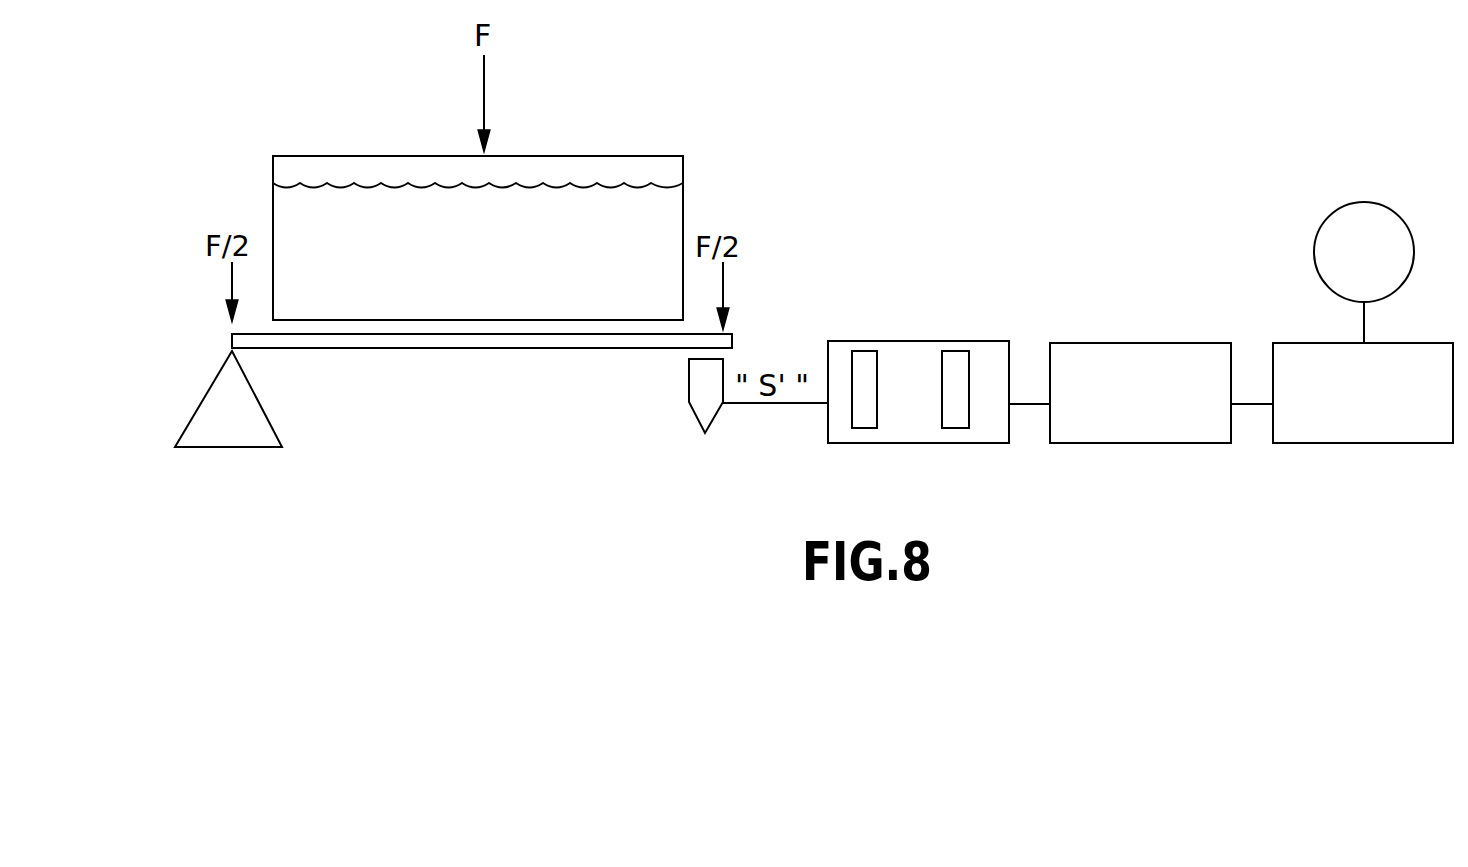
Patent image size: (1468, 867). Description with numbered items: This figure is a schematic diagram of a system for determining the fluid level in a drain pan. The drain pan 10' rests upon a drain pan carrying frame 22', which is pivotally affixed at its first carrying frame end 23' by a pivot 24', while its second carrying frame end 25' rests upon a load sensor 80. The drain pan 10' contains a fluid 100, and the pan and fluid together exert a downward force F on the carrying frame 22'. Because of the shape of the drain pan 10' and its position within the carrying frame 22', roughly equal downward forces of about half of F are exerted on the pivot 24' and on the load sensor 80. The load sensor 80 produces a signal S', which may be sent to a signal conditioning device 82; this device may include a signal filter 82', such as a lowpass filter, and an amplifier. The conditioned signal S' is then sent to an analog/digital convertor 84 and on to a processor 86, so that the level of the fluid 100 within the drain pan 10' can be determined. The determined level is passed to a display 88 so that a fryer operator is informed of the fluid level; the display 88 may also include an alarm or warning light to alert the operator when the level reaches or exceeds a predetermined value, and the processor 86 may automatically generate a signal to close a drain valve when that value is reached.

The drain pan 10' is at (478, 194).
The fluid 100 is at (499, 264).
The drain pan carrying frame 22' is at (482, 382).
The first carrying frame end 23' is at (186, 318).
The pivot 24' is at (264, 399).
The second carrying frame end 25' is at (785, 304).
The load sensor 80 is at (688, 385).
The signal conditioning device 82 is at (939, 403).
The signal filter 82' is at (912, 356).
The analog/digital convertor 84 is at (1150, 443).
The processor 86 is at (1363, 443).
The display 88 is at (1318, 237).